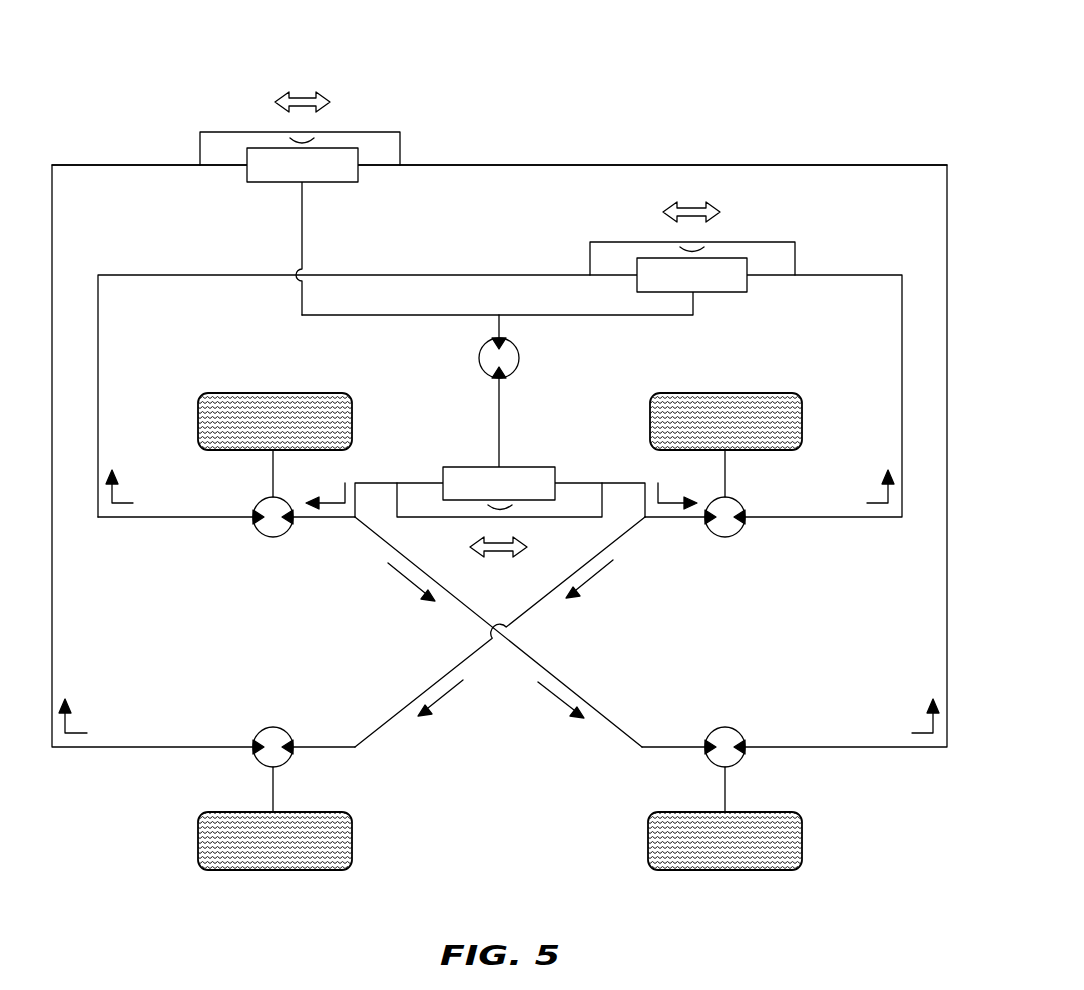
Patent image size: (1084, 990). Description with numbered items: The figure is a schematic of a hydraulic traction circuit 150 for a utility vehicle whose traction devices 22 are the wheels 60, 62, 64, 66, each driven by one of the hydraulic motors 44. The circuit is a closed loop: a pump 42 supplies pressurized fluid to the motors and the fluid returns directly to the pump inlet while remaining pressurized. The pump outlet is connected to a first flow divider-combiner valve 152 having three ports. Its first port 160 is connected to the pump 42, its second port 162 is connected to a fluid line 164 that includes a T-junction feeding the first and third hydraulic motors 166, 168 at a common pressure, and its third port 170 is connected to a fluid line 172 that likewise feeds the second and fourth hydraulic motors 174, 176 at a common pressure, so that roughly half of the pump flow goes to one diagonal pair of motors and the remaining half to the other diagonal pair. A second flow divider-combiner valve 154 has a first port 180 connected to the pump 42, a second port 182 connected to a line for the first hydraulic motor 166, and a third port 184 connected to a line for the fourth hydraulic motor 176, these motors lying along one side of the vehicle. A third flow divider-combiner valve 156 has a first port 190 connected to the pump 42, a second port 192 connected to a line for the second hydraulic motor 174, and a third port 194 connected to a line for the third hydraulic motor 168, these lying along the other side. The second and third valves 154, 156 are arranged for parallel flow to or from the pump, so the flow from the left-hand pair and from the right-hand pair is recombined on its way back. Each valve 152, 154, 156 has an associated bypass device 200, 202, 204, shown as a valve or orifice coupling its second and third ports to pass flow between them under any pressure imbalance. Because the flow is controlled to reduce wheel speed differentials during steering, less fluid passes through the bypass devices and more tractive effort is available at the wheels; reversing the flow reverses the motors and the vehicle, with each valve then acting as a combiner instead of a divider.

The hydraulic traction circuit 150 is at (739, 61).
The first flow divider-combiner valve 152 is at (462, 500).
The second flow divider-combiner valve 154 is at (276, 183).
The third flow divider-combiner valve 156 is at (720, 292).
The first port 160 is at (496, 467).
The second port 162 is at (557, 487).
The fluid line 164 is at (645, 517).
The third port 170 is at (443, 487).
The fluid line 172 is at (353, 517).
The first port 180 is at (303, 183).
The second port 182 is at (247, 172).
The third port 184 is at (358, 174).
The first port 190 is at (690, 292).
The second port 192 is at (635, 285).
The third port 194 is at (795, 280).
The bypass device 200 is at (508, 519).
The bypass device 202 is at (300, 127).
The bypass device 204 is at (698, 232).
The pump 42 is at (519, 353).
The traction devices 22 is at (500, 633).
The hydraulic motors 44 is at (500, 631).
The wheel 60 is at (293, 872).
The wheel 62 is at (300, 393).
The wheel 64 is at (700, 872).
The wheel 66 is at (697, 393).
The first hydraulic motor 166 is at (262, 764).
The third hydraulic motor 168 is at (740, 502).
The second hydraulic motor 174 is at (258, 502).
The fourth hydraulic motor 176 is at (740, 764).